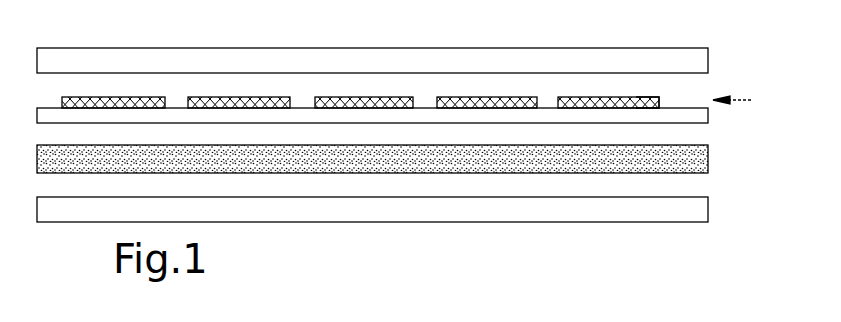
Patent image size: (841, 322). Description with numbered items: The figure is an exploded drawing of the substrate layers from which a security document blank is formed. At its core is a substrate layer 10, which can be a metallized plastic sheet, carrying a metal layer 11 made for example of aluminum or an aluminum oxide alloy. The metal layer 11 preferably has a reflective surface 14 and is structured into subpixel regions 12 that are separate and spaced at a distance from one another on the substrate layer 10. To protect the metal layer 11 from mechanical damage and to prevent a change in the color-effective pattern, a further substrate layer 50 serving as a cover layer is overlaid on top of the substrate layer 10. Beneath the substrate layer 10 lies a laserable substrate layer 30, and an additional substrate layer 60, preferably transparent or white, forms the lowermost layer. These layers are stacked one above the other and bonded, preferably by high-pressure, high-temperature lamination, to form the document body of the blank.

The substrate layer 10 is at (708, 115).
The metal layer 11 is at (753, 99).
The subpixel regions 12 is at (130, 97).
The reflective surface 14 is at (641, 98).
The laserable substrate layer 30 is at (708, 163).
The further substrate layer 50 is at (708, 65).
The additional substrate layer 60 is at (708, 212).